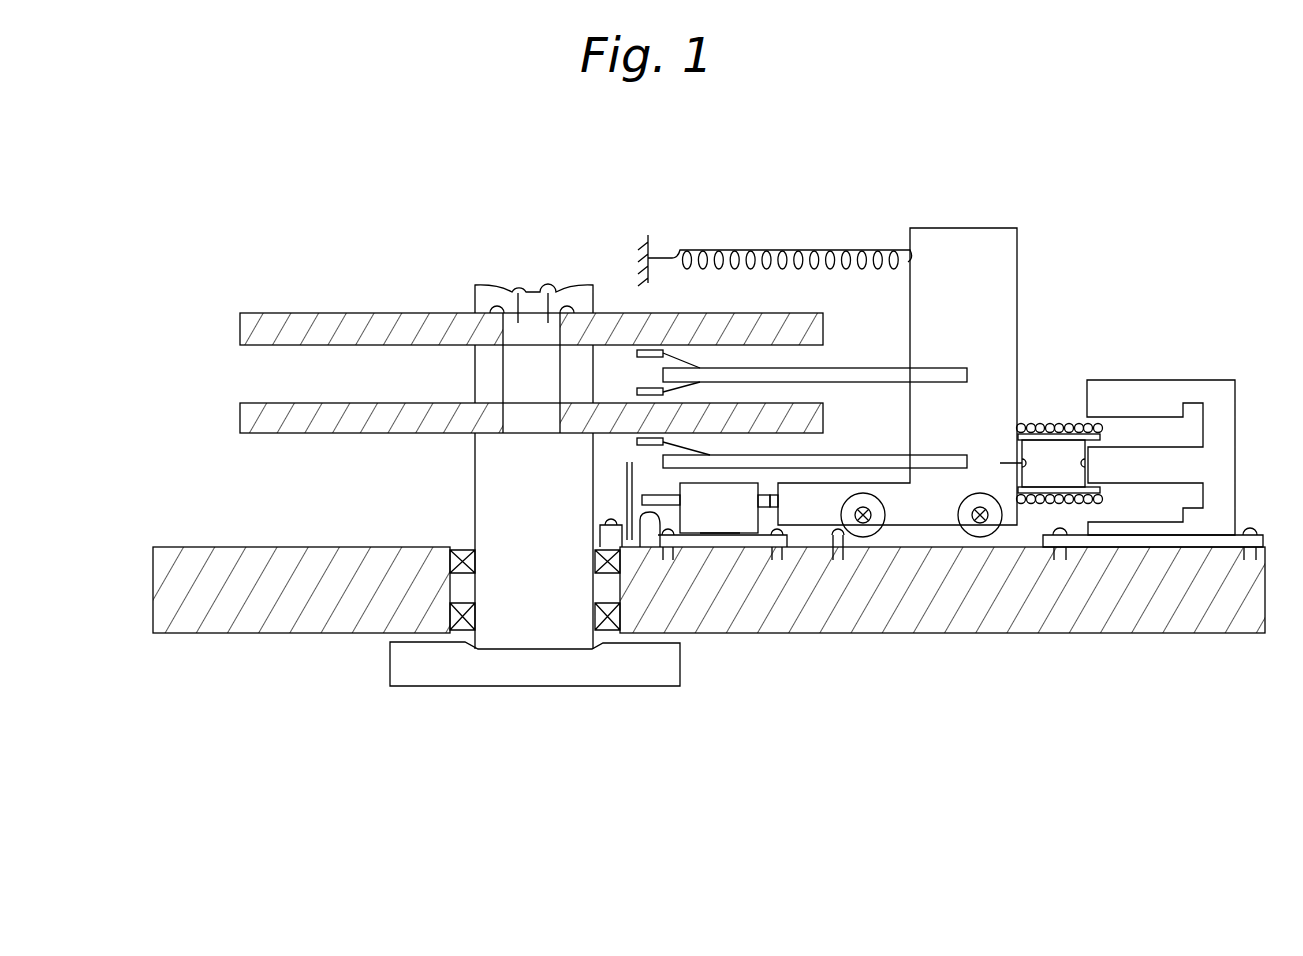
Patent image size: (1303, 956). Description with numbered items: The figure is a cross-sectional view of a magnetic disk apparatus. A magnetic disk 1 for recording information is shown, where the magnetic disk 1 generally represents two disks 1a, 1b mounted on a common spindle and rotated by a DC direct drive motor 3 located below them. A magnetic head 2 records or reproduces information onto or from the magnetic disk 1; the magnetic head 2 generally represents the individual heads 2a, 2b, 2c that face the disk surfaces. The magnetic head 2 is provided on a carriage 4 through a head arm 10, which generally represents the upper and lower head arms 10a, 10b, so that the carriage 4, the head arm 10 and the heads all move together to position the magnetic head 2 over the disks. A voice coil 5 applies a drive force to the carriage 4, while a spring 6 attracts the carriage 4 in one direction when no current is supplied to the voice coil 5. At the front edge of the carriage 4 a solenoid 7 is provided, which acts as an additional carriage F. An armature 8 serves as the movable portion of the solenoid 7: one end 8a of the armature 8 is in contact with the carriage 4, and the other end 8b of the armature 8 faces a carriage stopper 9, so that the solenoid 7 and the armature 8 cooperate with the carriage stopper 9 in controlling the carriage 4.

The magnetic disk 1 is at (217, 285).
The magnetic disk 1a is at (263, 418).
The magnetic disk 1b is at (282, 325).
The magnetic head 2 is at (622, 214).
The magnetic head 2a is at (640, 447).
The magnetic head 2b is at (638, 393).
The magnetic head 2c is at (652, 345).
The DC direct drive motor 3 is at (545, 668).
The carriage 4 is at (827, 502).
The voice coil 5 is at (1050, 425).
The spring 6 is at (790, 250).
The solenoid 7 is at (745, 505).
The armature 8 is at (772, 505).
The one end of armature 8a is at (778, 506).
The other end of armature 8b is at (643, 498).
The carriage stopper 9 is at (650, 520).
The head arm 10 is at (968, 452).
The head arm 10a is at (858, 456).
The head arm 10b is at (858, 370).
The additional carriage F is at (712, 508).